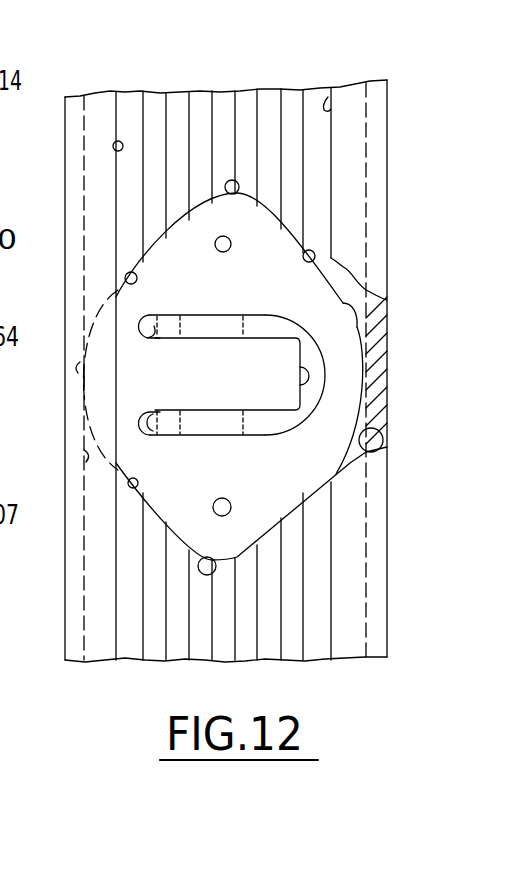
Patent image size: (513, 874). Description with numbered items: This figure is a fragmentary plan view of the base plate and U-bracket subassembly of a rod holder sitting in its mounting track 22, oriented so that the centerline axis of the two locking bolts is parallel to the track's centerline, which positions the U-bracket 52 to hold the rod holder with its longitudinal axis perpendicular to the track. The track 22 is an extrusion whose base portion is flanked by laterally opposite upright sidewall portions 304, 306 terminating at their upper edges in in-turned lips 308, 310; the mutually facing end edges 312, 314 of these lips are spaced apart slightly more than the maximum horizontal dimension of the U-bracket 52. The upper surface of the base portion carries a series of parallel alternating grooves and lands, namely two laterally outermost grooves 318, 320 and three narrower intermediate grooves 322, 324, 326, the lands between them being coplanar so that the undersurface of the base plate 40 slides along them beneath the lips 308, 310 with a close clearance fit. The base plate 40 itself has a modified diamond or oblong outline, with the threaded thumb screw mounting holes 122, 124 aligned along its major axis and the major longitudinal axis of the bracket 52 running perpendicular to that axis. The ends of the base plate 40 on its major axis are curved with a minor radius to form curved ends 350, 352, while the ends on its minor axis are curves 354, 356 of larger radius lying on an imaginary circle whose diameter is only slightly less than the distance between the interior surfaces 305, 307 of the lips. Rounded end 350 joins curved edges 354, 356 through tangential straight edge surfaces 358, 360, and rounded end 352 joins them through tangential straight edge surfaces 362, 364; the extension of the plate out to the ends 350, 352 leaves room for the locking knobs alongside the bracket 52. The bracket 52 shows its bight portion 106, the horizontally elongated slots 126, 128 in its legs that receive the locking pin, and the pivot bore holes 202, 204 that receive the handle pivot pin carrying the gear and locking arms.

The track 22 is at (93, 93).
The base plate 40 is at (243, 304).
The U-bracket 52 is at (206, 438).
The bight portion 106 is at (316, 398).
The threaded base plate hole 122 is at (215, 244).
The threaded base plate hole 124 is at (233, 503).
The horizontally elongated slot 126 is at (290, 332).
The horizontally elongated slot 128 is at (288, 420).
The pivot bore hole 202 is at (172, 336).
The pivot bore hole 204 is at (177, 430).
The upright sidewall portion 304 is at (116, 373).
The interior surface 305 is at (92, 465).
The upright sidewall portion 306 is at (378, 350).
The interior surface 307 is at (385, 450).
The in-turned lip 308 is at (92, 183).
The in-turned lip 310 is at (357, 183).
The end edge 312 is at (113, 146).
The end edge 314 is at (328, 97).
The laterally outermost groove 318 is at (127, 98).
The laterally outermost groove 320 is at (312, 93).
The intermediate groove 322 is at (173, 98).
The intermediate groove 324 is at (223, 98).
The intermediate groove 326 is at (265, 100).
The curved end 350 is at (222, 208).
The curved end 352 is at (214, 545).
The curved edge 354 is at (80, 381).
The curved edge 356 is at (343, 305).
The tangential straight edge surface 358 is at (137, 280).
The tangential straight edge surface 360 is at (303, 256).
The tangential straight edge surface 362 is at (138, 483).
The tangential straight edge surface 364 is at (327, 470).